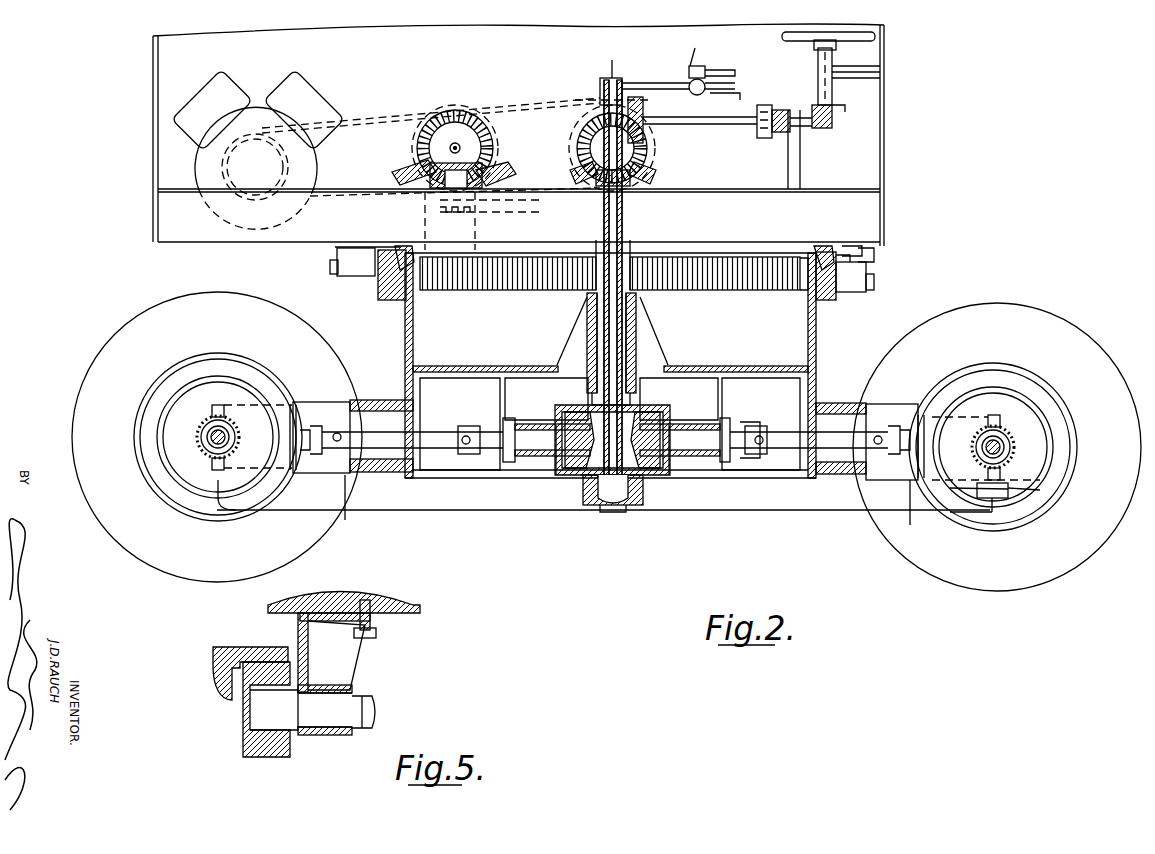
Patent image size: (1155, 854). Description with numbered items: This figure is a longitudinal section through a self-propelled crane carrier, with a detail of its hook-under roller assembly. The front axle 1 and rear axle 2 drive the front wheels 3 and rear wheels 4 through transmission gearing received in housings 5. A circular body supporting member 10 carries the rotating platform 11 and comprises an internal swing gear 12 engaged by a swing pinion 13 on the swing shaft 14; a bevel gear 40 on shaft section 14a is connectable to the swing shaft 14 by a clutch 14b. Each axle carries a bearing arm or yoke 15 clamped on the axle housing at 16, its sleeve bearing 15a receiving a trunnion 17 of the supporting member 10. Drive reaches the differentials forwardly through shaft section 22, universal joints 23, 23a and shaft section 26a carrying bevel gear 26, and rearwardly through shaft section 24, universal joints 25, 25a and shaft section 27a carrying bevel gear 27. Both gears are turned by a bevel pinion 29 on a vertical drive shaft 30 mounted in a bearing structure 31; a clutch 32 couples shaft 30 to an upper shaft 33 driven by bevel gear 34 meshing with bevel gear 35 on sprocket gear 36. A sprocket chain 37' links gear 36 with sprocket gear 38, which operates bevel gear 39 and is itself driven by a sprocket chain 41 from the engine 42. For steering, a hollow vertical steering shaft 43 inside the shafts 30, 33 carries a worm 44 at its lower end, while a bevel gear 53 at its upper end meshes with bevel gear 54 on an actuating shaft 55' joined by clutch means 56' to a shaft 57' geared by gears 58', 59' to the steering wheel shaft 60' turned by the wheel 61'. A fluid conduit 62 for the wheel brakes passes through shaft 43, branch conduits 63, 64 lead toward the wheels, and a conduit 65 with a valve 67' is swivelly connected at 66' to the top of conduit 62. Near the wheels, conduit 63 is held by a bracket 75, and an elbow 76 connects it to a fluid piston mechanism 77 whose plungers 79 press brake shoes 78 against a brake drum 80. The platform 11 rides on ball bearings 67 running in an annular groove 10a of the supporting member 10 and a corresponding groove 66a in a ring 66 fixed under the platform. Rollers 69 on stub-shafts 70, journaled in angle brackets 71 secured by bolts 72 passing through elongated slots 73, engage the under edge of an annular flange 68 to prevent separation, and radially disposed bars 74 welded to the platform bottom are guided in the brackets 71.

In FIG. 2, the front axle 1 is at (1006, 440).
In FIG. 2, the rear axle 2 is at (206, 428).
In FIG. 2, the front wheels 3 is at (1052, 318).
In FIG. 2, the rear wheels 4 is at (82, 390).
In FIG. 2, the housings 5 is at (160, 444).
In FIG. 2, the body supporting member 10 is at (816, 342).
In FIG. 2, the annular groove 10a is at (806, 290).
In FIG. 2, the rotating platform 11 is at (735, 229).
In FIG. 5, the rotating platform 11 is at (400, 594).
In FIG. 2, the internal swing gear 12 is at (734, 292).
In FIG. 2, the swing pinion 13 is at (492, 292).
In FIG. 2, the swing shaft 14 is at (485, 215).
In FIG. 2, the shaft section 14a is at (440, 206).
In FIG. 2, the clutch 14b is at (485, 210).
In FIG. 2, the bearing arm or yoke 15 is at (342, 382).
In FIG. 2, the sleeve bearing 15a is at (842, 390).
In FIG. 2, the clamp 16 is at (236, 400).
In FIG. 2, the trunnion 17 is at (376, 476).
In FIG. 2, the forwardly extending shaft section 22 is at (776, 436).
In FIG. 2, the universal joint 23 is at (878, 462).
In FIG. 2, the universal joint 23a is at (748, 430).
In FIG. 2, the rearwardly extending shaft section 24 is at (442, 432).
In FIG. 2, the universal joint 25 is at (334, 460).
In FIG. 2, the universal joint 25a is at (486, 428).
In FIG. 2, the bevel gear 26 is at (652, 480).
In FIG. 2, the shaft section 26a is at (690, 408).
In FIG. 2, the bevel gear 27 is at (575, 488).
In FIG. 2, the shaft section 27a is at (562, 468).
In FIG. 2, the bevel pinion 29 is at (636, 405).
In FIG. 2, the vertical drive shaft 30 is at (624, 343).
In FIG. 2, the bearing structure 31 is at (636, 330).
In FIG. 2, the clutch 32 is at (634, 250).
In FIG. 2, the upper shaft 33 is at (626, 222).
In FIG. 2, the bevel gear 34 is at (655, 175).
In FIG. 2, the bevel gear 35 is at (644, 140).
In FIG. 2, the sprocket gear 36 is at (578, 164).
In FIG. 2, the sprocket chain 37' is at (587, 132).
In FIG. 2, the sprocket gear 38 is at (498, 136).
In FIG. 2, the bevel gear 39 is at (416, 146).
In FIG. 2, the bevel gear 40 is at (404, 174).
In FIG. 2, the sprocket chain 41 is at (400, 112).
In FIG. 2, the engine 42 is at (318, 108).
In FIG. 2, the vertical steering shaft 43 is at (592, 425).
In FIG. 2, the worm 44 is at (662, 468).
In FIG. 2, the bevel gear 53 is at (585, 138).
In FIG. 2, the bevel gear 54 is at (604, 112).
In FIG. 2, the actuating shaft 55' is at (715, 102).
In FIG. 2, the clutch means 56' is at (773, 107).
In FIG. 2, the shaft 57' is at (816, 149).
In FIG. 2, the gear 58' is at (838, 122).
In FIG. 2, the gear 59' is at (858, 111).
In FIG. 2, the steering wheel shaft 60' is at (797, 72).
In FIG. 2, the steering wheel 61' is at (856, 55).
In FIG. 2, the fluid conduit 62 is at (628, 92).
In FIG. 2, the branch conduit 63 is at (626, 512).
In FIG. 2, the branch conduit 64 is at (590, 506).
In FIG. 2, the conduit 65 is at (712, 98).
In FIG. 2, the ring 66 is at (597, 245).
In FIG. 2, the swivel connection 66' is at (619, 56).
In FIG. 2, the annular groove 66a is at (876, 252).
In FIG. 2, the ball bearings 67 is at (842, 238).
In FIG. 2, the valve 67' is at (701, 47).
In FIG. 2, the annular flange 68 is at (340, 266).
In FIG. 5, the annular flange 68 is at (252, 647).
In FIG. 2, the rollers 69 is at (386, 300).
In FIG. 5, the rollers 69 is at (262, 758).
In FIG. 2, the stub-shaft 70 is at (336, 275).
In FIG. 5, the stub-shaft 70 is at (318, 720).
In FIG. 2, the angle brackets 71 is at (852, 260).
In FIG. 5, the angle brackets 71 is at (310, 660).
In FIG. 5, the bolts 72 is at (378, 638).
In FIG. 5, the elongated slots 73 is at (384, 624).
In FIG. 5, the bars 74 is at (280, 622).
In FIG. 2, the bracket 75 is at (390, 512).
In FIG. 2, the elbow 76 is at (992, 520).
In FIG. 2, the fluid piston mechanism 77 is at (962, 518).
In FIG. 2, the brake shoes 78 is at (1008, 500).
In FIG. 2, the plungers 79 is at (1010, 500).
In FIG. 2, the brake drum 80 is at (1040, 492).